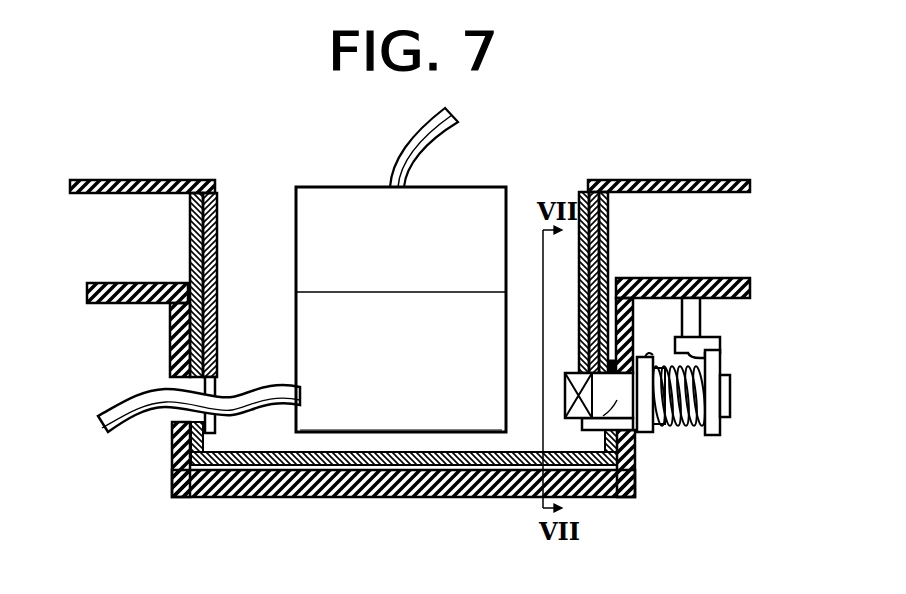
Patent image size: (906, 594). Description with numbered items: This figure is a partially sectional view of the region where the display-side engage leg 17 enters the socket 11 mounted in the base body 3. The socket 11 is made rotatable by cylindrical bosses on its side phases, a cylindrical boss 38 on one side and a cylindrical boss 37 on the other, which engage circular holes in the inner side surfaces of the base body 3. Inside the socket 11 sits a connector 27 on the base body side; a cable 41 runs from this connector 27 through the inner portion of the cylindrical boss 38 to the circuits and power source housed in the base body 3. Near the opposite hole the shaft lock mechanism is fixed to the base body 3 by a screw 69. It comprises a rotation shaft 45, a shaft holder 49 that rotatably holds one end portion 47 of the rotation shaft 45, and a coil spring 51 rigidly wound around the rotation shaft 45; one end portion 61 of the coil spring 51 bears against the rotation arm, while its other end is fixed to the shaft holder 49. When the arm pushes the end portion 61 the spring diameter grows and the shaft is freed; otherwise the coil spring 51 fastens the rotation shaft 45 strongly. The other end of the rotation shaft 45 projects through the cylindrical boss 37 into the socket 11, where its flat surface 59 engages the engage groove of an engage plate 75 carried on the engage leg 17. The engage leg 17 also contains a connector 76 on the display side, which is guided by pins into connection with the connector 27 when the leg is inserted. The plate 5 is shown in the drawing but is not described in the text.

The base body 3 is at (143, 282).
The upper panel 5 is at (99, 193).
The socket 11 is at (190, 238).
The engage leg 17 is at (217, 293).
The connector 27 is at (367, 402).
The cylindrical boss 37 is at (637, 452).
The cylindrical boss 38 is at (170, 460).
The cable 41 is at (142, 415).
The rotation shaft 45 is at (608, 468).
The one end portion 47 is at (725, 397).
The shaft holder 49 is at (713, 362).
The coil spring 51 is at (675, 428).
The flat surface 59 is at (583, 420).
The one end portion 61 is at (650, 363).
The screw 69 is at (693, 345).
The engage plate 75 is at (578, 208).
The connector 76 is at (335, 215).